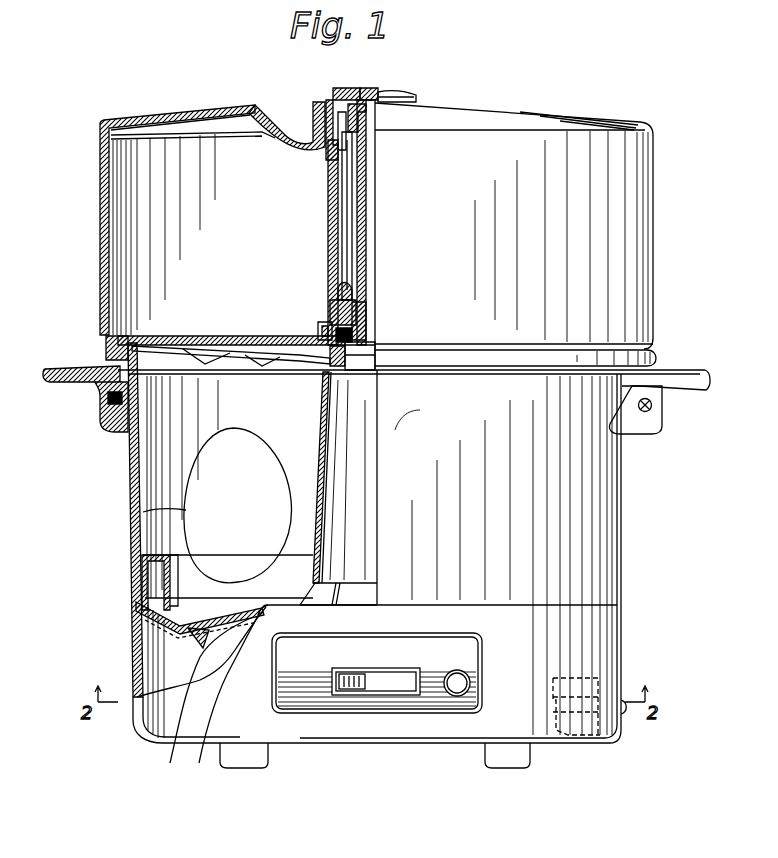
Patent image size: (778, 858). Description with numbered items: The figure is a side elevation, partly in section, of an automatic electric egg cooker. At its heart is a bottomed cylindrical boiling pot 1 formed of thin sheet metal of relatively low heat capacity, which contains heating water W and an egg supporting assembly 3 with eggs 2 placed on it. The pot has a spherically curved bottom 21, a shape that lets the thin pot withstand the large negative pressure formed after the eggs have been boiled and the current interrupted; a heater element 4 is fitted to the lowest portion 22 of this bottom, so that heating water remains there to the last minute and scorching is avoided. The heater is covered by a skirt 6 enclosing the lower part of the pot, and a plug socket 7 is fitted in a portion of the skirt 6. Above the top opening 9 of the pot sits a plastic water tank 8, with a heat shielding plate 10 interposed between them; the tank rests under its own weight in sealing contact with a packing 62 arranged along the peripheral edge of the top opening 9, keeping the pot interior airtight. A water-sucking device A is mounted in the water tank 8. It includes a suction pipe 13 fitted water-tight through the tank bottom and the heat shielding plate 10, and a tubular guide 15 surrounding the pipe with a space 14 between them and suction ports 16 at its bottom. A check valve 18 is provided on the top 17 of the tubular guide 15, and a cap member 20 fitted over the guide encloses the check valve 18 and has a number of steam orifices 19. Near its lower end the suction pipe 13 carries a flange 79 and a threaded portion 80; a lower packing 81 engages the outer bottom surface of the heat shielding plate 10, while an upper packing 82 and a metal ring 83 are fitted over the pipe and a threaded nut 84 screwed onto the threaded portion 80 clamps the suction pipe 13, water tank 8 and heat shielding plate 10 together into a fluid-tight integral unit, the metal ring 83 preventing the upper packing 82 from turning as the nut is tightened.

The boiling pot 1 is at (130, 455).
The eggs 2 is at (182, 515).
The egg supporting assembly 3 is at (165, 574).
The heater element 4 is at (201, 694).
The skirt 6 is at (597, 636).
The plug socket 7 is at (614, 712).
The water tank 8 is at (100, 212).
The top opening 9 is at (642, 356).
The heat shielding plate 10 is at (295, 364).
The suction pipe 13 is at (348, 240).
The space 14 is at (341, 213).
The tubular guide 15 is at (328, 185).
The suction ports 16 is at (320, 332).
The top of the tubular guide 17 is at (332, 108).
The check valve 18 is at (380, 112).
The steam orifices 19 is at (350, 90).
The cap member 20 is at (368, 92).
The spherically curved bottom 21 is at (221, 696).
The lowest portion of the pot bottom 22 is at (195, 640).
The packing 62 is at (106, 360).
The flange 79 is at (338, 366).
The threaded portion 80 is at (362, 318).
The lower packing 81 is at (348, 368).
The upper packing 82 is at (355, 333).
The metal ring 83 is at (331, 310).
The threaded nut 84 is at (338, 292).
The water-sucking device A is at (281, 222).
The heating water W is at (152, 626).